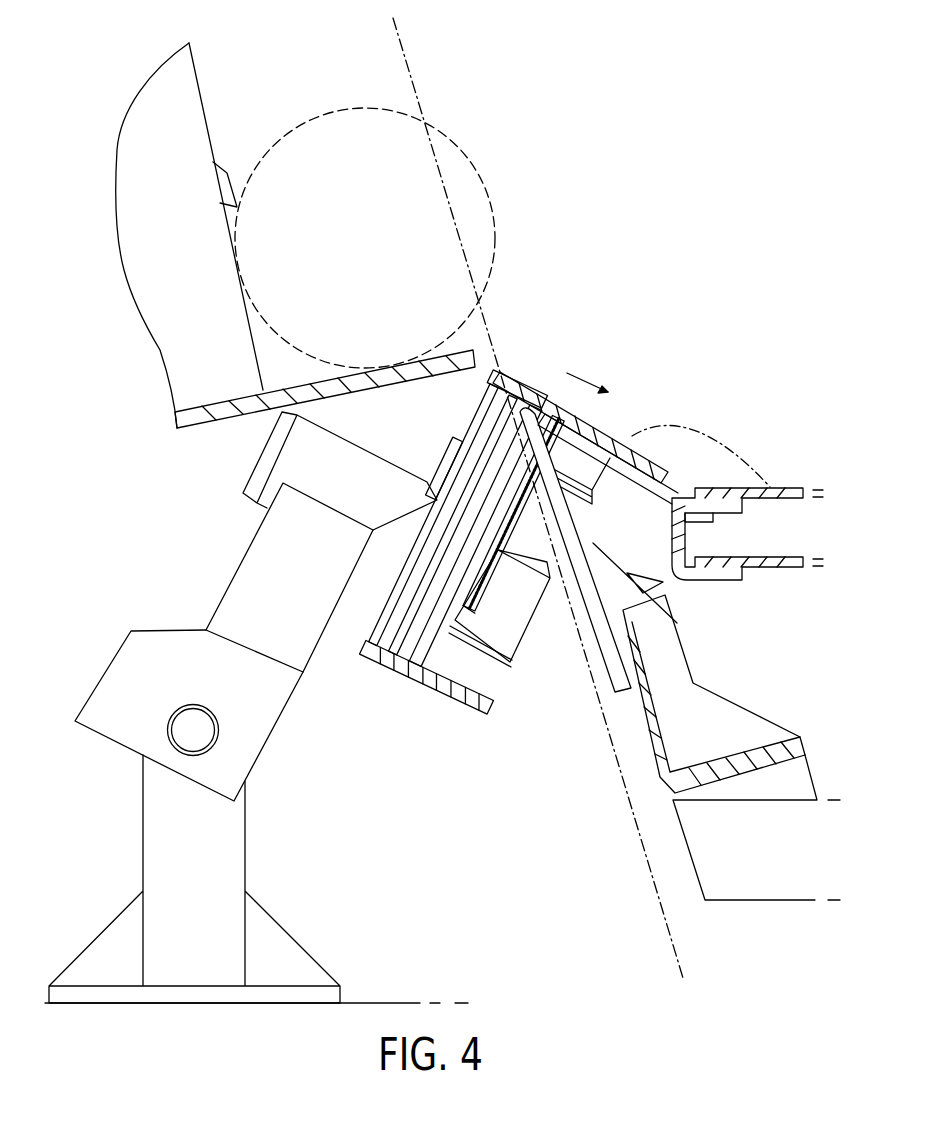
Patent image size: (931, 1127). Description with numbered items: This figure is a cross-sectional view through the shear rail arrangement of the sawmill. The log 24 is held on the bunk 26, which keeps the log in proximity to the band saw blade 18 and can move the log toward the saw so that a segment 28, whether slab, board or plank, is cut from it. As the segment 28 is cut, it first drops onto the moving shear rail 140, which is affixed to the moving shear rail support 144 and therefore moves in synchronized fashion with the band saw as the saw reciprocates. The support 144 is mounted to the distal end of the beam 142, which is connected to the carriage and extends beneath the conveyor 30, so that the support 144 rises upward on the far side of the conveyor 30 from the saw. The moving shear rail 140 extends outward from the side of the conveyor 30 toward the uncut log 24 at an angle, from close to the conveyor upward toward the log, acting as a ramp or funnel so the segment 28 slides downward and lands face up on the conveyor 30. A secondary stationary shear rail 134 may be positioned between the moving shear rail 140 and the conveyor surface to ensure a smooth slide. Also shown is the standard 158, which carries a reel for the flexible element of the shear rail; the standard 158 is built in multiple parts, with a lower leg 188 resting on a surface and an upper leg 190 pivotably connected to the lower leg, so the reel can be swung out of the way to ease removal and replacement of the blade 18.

The blade 18 is at (418, 93).
The log 24 is at (347, 157).
The bunk 26 is at (150, 258).
The segment 28 is at (700, 445).
The conveyor 30 is at (800, 487).
The stationary shear rail 134 is at (633, 463).
The moving shear rail 140 is at (613, 428).
The beam 142 is at (747, 887).
The moving shear rail support 144 is at (727, 717).
The standard 158 is at (163, 615).
The lower leg 188 is at (230, 857).
The upper leg 190 is at (294, 630).